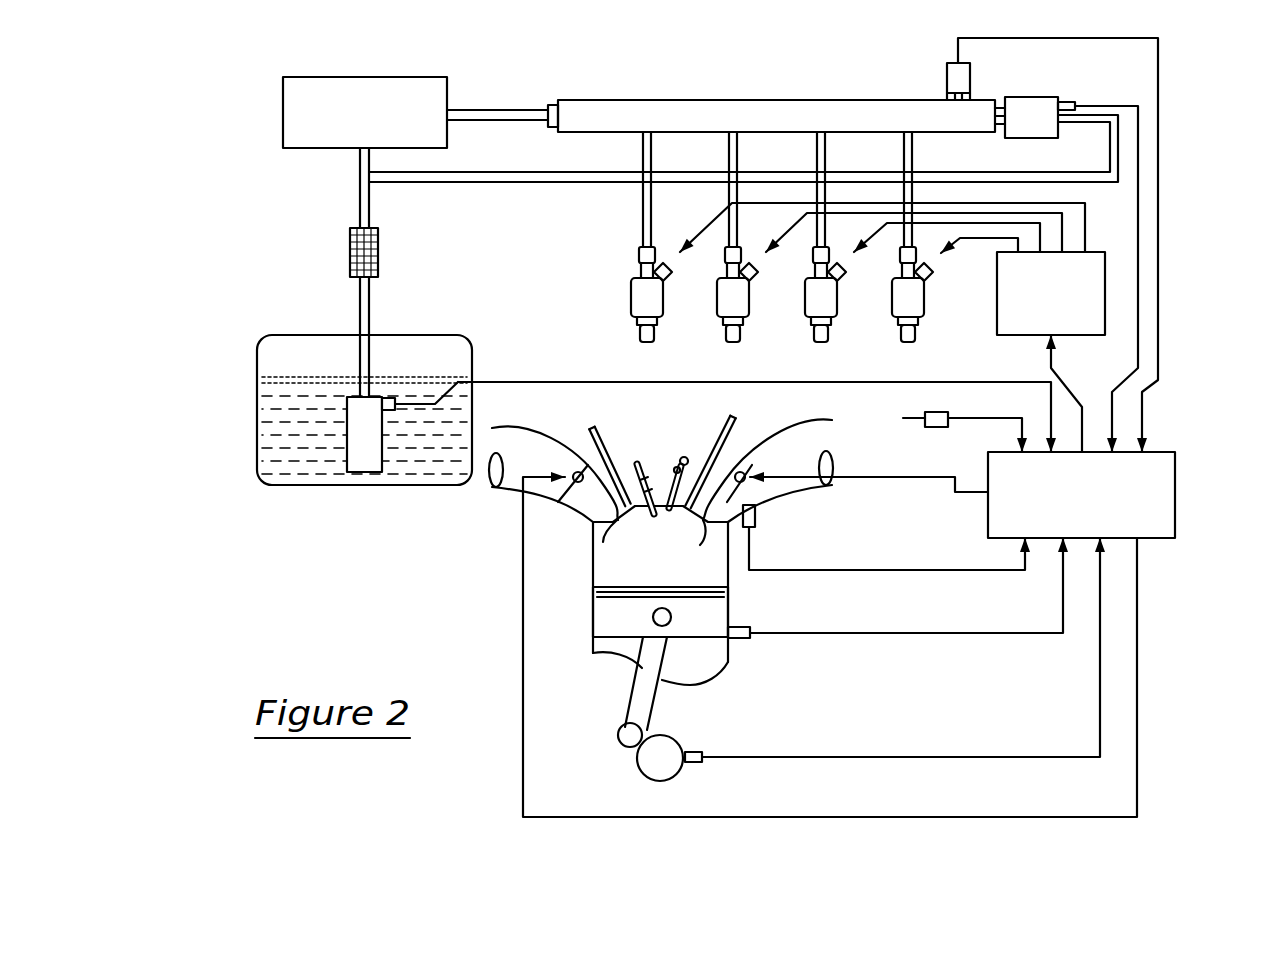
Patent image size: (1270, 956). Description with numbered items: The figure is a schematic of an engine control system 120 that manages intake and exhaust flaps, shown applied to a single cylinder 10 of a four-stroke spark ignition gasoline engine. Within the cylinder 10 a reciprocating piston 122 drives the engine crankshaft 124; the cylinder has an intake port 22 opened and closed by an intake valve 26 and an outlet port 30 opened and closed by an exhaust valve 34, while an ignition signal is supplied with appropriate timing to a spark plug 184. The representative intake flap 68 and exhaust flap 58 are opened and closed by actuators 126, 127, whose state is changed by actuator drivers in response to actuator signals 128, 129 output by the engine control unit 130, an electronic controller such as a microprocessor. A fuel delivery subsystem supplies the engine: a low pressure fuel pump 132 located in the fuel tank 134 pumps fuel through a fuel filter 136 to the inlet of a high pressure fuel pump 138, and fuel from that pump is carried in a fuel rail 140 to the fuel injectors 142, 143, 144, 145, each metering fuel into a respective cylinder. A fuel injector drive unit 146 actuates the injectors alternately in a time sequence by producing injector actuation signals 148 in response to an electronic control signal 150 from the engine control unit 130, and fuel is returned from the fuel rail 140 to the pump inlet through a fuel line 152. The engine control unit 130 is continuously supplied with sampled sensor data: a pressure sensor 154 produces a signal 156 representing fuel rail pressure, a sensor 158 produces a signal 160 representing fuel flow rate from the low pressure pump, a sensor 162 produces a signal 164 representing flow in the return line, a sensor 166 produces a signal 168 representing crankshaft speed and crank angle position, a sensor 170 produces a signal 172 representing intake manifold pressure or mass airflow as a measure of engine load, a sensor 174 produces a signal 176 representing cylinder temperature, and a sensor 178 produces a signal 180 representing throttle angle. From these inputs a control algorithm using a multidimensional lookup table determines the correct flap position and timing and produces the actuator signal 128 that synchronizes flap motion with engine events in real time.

The cylinder 10 is at (593, 657).
The intake port 22 is at (700, 537).
The intake valve 26 is at (722, 424).
The outlet port 30 is at (605, 542).
The exhaust valve 34 is at (603, 431).
The exhaust flap 58 is at (565, 470).
The intake flap 68 is at (748, 465).
The system 120 is at (460, 557).
The reciprocating piston 122 is at (610, 620).
The engine crankshaft 124 is at (652, 765).
The actuator 126 is at (790, 464).
The actuator 127 is at (583, 503).
The actuator signal 128 is at (955, 490).
The actuator signal 129 is at (1005, 800).
The engine control unit 130 is at (1177, 452).
The low pressure fuel pump 132 is at (347, 455).
The fuel tank 134 is at (257, 410).
The fuel filter 136 is at (350, 250).
The high pressure fuel pump 138 is at (283, 108).
The fuel rail 140 is at (610, 100).
The fuel injector 142 is at (641, 330).
The fuel injector 143 is at (727, 330).
The fuel injector 144 is at (815, 330).
The fuel injector 145 is at (902, 330).
The fuel injector drive unit 146 is at (997, 298).
The injector actuation signals 148 is at (1042, 240).
The electronic control signal 150 is at (1068, 385).
The fuel line 152 is at (1012, 172).
The pressure sensor 154 is at (947, 80).
The signal 156 is at (1158, 248).
The sensor 158 is at (396, 400).
The signal 160 is at (905, 382).
The sensor 162 is at (1073, 98).
The signal 164 is at (1138, 308).
The sensor 166 is at (692, 762).
The signal 168 is at (758, 757).
The sensor 170 is at (756, 516).
The signal 172 is at (805, 570).
The sensor 174 is at (737, 638).
The signal 176 is at (1028, 635).
The sensor 178 is at (903, 418).
The signal 180 is at (968, 419).
The spark plug 184 is at (640, 482).